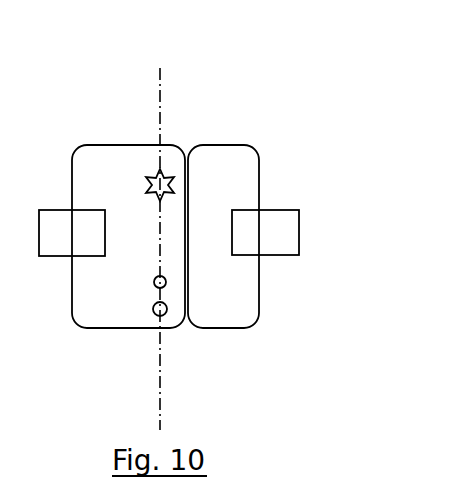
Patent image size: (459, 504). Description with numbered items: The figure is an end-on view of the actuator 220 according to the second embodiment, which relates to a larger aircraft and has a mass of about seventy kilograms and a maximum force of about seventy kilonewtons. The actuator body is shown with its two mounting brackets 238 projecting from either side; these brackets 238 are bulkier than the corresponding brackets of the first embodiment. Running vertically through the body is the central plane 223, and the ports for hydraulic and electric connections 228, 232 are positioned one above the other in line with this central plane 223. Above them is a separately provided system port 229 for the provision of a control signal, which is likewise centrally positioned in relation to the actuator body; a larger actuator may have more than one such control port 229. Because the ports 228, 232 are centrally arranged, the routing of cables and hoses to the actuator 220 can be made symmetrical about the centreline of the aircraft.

The actuator 220 is at (117, 160).
The central plane 223 is at (162, 112).
The port for hydraulic and electric connections 228 is at (155, 315).
The system port 229 is at (155, 172).
The port for hydraulic and electric connections 232 is at (153, 282).
The mounting bracket 238 is at (58, 217).